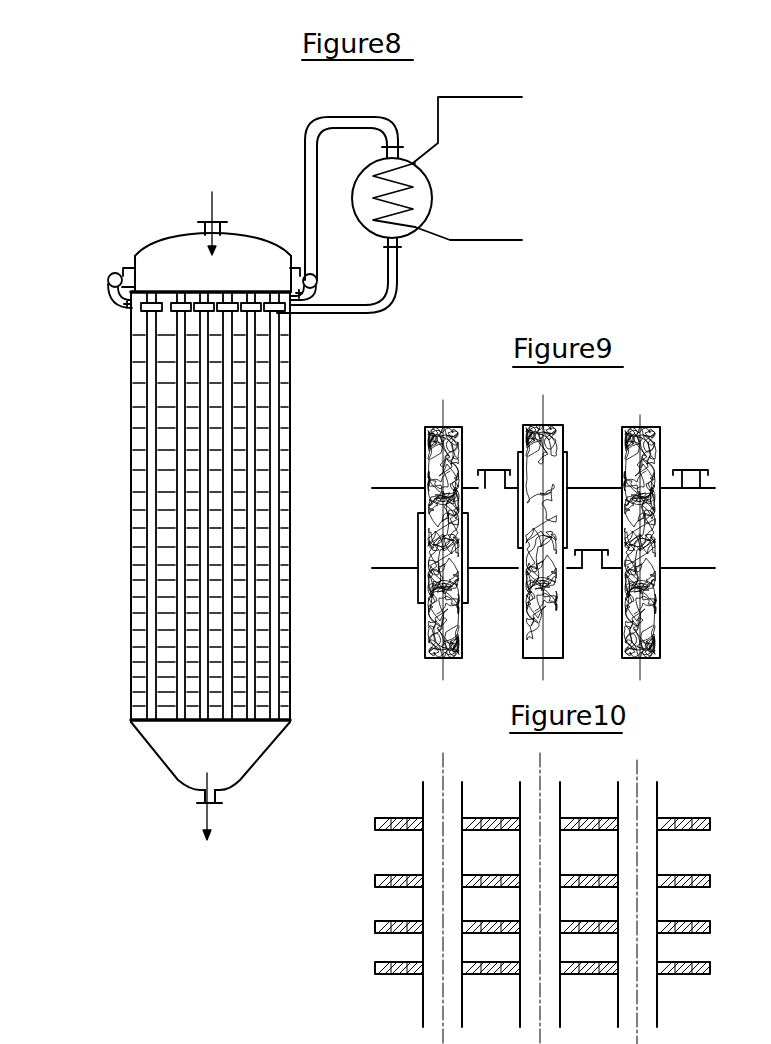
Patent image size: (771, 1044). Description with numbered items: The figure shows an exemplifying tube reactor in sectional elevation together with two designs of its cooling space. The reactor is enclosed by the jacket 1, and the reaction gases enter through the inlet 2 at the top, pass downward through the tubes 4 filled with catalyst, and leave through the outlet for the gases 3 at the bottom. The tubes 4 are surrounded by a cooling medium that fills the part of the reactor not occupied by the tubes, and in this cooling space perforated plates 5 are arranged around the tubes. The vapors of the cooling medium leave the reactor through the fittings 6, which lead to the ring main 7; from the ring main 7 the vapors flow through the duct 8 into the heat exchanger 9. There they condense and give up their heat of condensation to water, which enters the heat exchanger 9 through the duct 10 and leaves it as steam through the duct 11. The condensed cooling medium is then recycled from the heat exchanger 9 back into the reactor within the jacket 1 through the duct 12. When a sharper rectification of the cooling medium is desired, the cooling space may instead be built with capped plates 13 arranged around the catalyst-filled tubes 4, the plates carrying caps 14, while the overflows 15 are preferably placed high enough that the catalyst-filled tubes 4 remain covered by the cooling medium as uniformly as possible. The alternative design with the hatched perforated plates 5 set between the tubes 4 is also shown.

In FIG. 8, the jacket 1 is at (130, 500).
In FIG. 8, the inlet 2 is at (203, 220).
In FIG. 8, the outlet for the gases 3 is at (197, 805).
In FIG. 8, the tubes 4 is at (173, 579).
In FIG. 9, the tubes 4 is at (432, 482).
In FIG. 10, the tubes 4 is at (540, 898).
In FIG. 8, the perforated plates 5 is at (257, 647).
In FIG. 10, the perforated plates 5 is at (475, 875).
In FIG. 8, the fittings 6 is at (127, 307).
In FIG. 8, the ring main 7 is at (112, 285).
In FIG. 8, the duct 8 is at (345, 117).
In FIG. 8, the heat exchanger 9 is at (432, 198).
In FIG. 8, the duct 10 is at (498, 240).
In FIG. 8, the duct 11 is at (498, 97).
In FIG. 8, the duct 12 is at (335, 316).
In FIG. 9, the capped plates 13 is at (565, 568).
In FIG. 9, the caps 14 is at (690, 468).
In FIG. 9, the overflows 15 is at (520, 508).